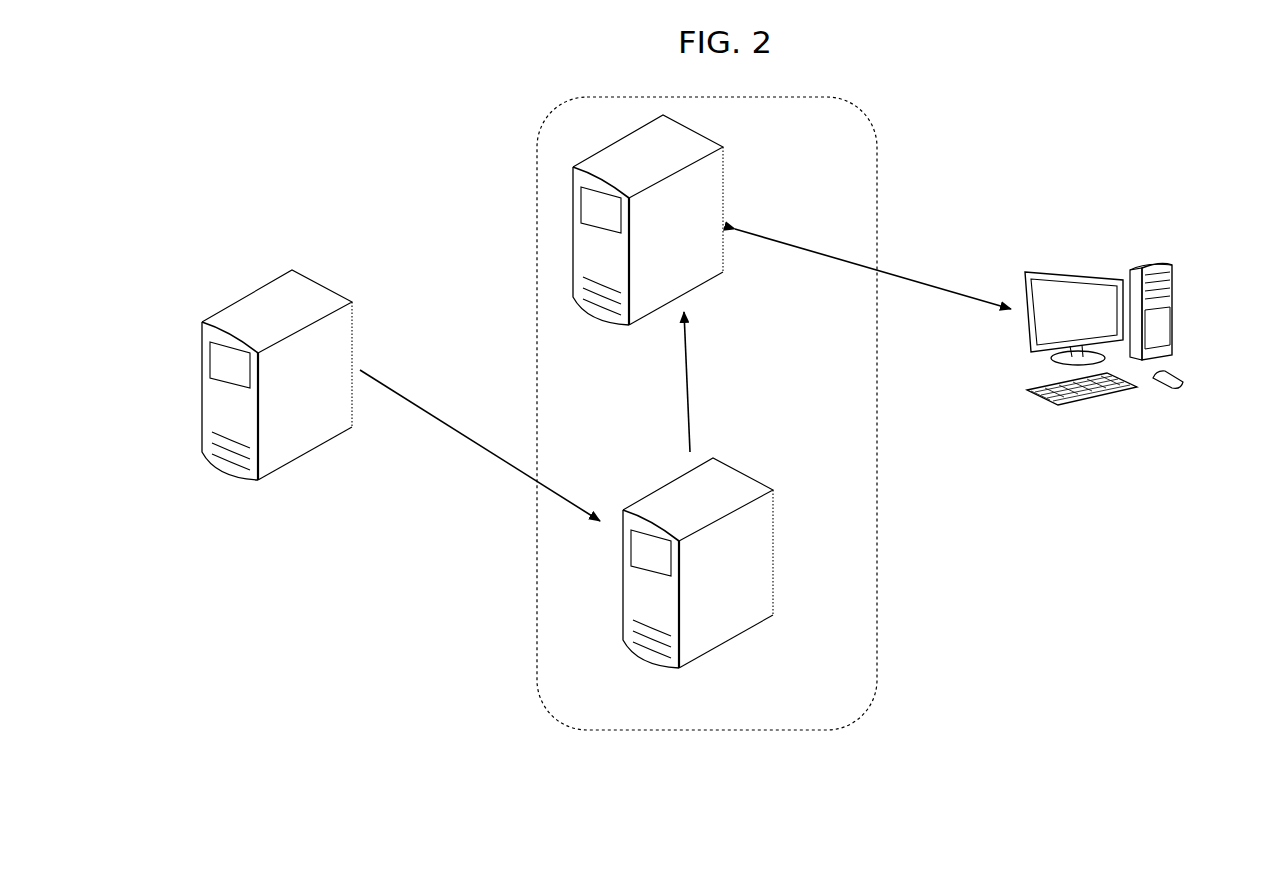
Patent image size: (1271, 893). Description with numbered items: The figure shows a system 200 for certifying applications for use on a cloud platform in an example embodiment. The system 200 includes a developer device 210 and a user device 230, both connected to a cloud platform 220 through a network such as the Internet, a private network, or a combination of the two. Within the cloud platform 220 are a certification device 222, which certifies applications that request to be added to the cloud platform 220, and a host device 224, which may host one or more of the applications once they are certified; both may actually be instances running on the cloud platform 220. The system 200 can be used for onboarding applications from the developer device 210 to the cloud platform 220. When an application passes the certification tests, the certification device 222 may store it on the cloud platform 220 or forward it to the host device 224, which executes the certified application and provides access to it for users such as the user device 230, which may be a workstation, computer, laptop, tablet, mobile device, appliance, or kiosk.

The system 200 is at (238, 170).
The developer device 210 is at (339, 343).
The cloud platform 220 is at (878, 150).
The certification device 222 is at (760, 532).
The host device 224 is at (712, 188).
The user device 230 is at (1172, 297).